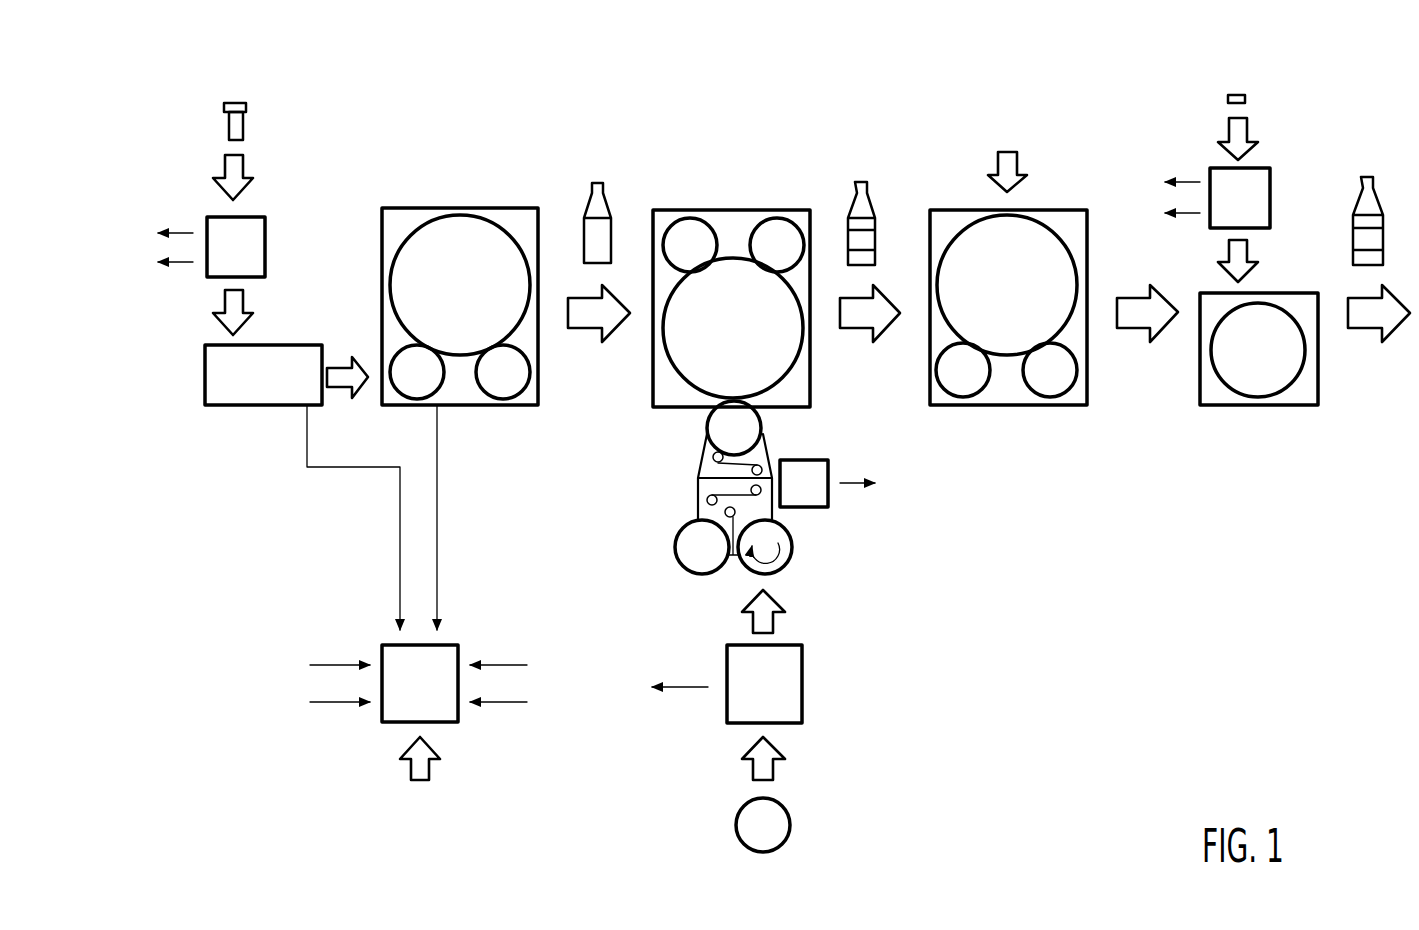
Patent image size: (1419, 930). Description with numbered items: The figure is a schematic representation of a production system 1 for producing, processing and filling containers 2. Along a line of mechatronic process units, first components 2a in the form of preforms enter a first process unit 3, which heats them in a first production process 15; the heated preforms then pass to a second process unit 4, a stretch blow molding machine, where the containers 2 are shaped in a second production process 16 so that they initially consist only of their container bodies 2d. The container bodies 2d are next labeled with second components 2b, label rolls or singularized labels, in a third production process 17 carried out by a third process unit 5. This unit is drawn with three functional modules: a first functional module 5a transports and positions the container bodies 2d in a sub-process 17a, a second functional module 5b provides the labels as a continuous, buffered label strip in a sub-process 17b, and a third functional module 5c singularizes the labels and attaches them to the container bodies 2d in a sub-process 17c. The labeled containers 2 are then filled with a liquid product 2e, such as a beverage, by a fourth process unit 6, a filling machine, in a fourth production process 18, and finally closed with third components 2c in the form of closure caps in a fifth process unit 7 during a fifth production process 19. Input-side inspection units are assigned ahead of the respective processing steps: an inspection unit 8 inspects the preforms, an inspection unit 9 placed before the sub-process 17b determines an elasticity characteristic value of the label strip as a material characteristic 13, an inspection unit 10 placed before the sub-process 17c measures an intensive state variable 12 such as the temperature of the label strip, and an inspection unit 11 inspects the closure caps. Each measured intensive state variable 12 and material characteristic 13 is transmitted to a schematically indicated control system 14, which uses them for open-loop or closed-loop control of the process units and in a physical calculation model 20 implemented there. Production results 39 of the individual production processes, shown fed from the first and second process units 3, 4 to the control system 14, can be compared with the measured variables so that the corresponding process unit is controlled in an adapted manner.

The production system 1 is at (1208, 615).
The containers 2 is at (882, 201).
The first components 2a is at (244, 120).
The second components 2b is at (678, 550).
The third components 2c is at (1246, 99).
The container bodies 2d is at (587, 207).
The liquid product 2e is at (1012, 163).
The first process unit 3 is at (270, 390).
The second process unit 4 is at (398, 225).
The third process unit 5 is at (620, 425).
The first functional module 5a is at (668, 406).
The second functional module 5b is at (700, 497).
The third functional module 5c is at (696, 470).
The fourth process unit 6 is at (946, 225).
The fifth process unit 7 is at (1306, 396).
The inspection unit 8 is at (244, 262).
The inspection unit 9 is at (772, 697).
The inspection unit 10 is at (818, 496).
The inspection unit 11 is at (1255, 210).
The intensive state variable 12 is at (184, 233).
The material characteristic 13 is at (184, 262).
The control system 14 is at (434, 696).
The first production process 15 is at (235, 412).
The second production process 16 is at (474, 200).
The third production process 17 is at (734, 200).
The sub-process 17a is at (794, 393).
The sub-process 17b is at (792, 575).
The sub-process 17c is at (780, 433).
The fourth production process 18 is at (1003, 415).
The fifth production process 19 is at (1250, 415).
The physical calculation model 20 is at (428, 766).
The production results 39 is at (337, 468).